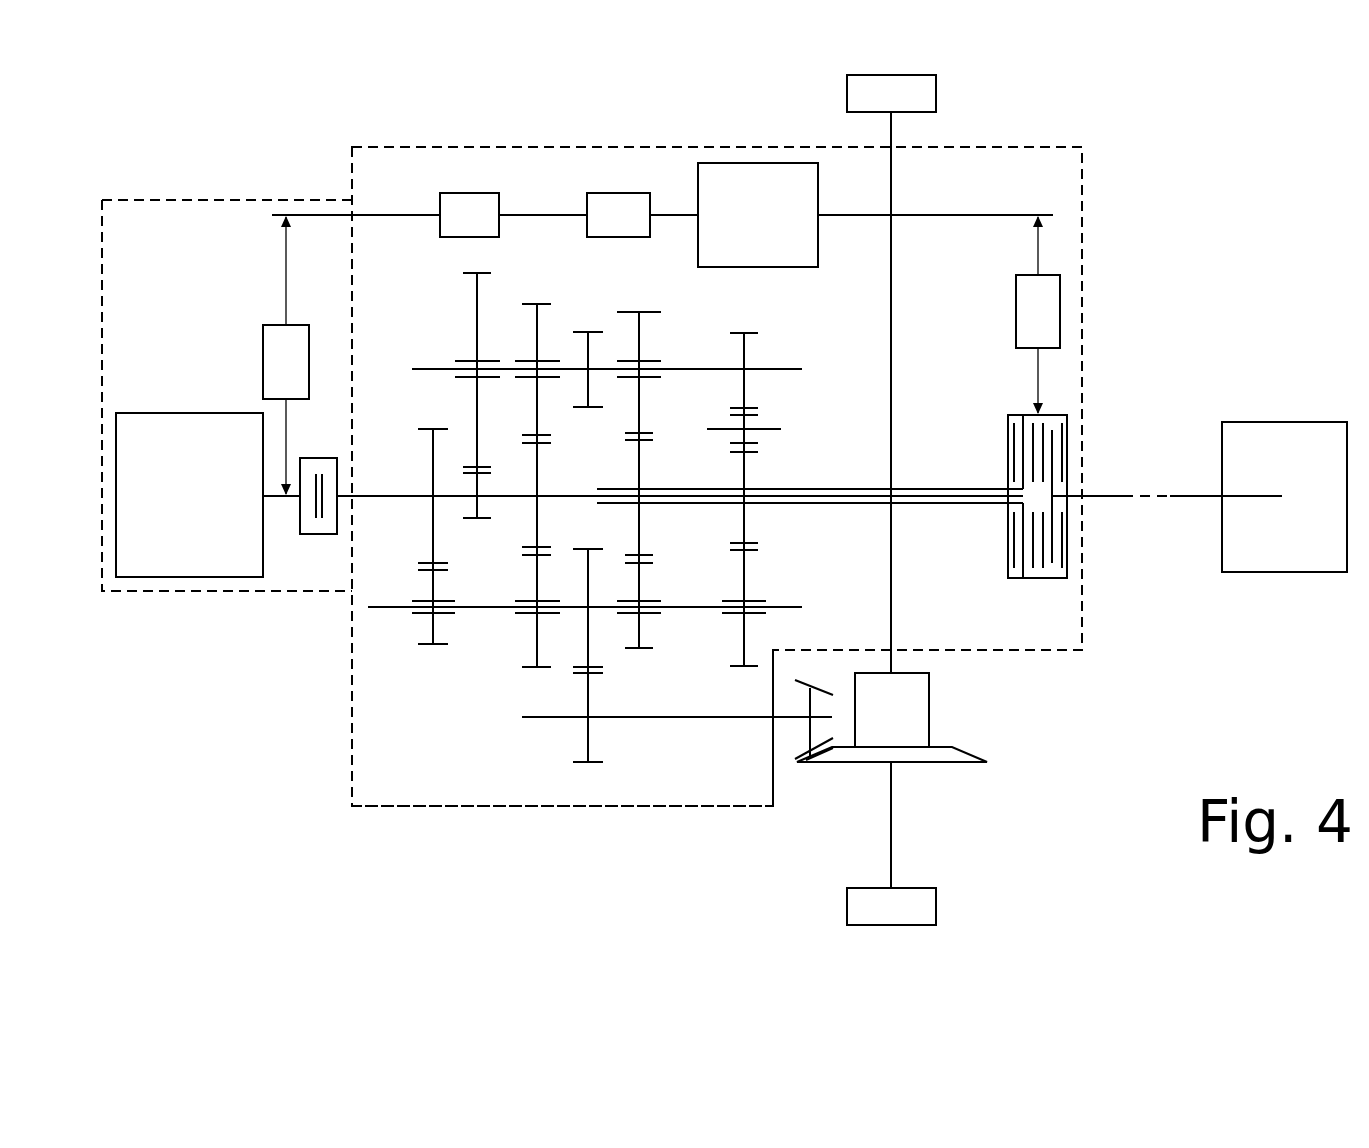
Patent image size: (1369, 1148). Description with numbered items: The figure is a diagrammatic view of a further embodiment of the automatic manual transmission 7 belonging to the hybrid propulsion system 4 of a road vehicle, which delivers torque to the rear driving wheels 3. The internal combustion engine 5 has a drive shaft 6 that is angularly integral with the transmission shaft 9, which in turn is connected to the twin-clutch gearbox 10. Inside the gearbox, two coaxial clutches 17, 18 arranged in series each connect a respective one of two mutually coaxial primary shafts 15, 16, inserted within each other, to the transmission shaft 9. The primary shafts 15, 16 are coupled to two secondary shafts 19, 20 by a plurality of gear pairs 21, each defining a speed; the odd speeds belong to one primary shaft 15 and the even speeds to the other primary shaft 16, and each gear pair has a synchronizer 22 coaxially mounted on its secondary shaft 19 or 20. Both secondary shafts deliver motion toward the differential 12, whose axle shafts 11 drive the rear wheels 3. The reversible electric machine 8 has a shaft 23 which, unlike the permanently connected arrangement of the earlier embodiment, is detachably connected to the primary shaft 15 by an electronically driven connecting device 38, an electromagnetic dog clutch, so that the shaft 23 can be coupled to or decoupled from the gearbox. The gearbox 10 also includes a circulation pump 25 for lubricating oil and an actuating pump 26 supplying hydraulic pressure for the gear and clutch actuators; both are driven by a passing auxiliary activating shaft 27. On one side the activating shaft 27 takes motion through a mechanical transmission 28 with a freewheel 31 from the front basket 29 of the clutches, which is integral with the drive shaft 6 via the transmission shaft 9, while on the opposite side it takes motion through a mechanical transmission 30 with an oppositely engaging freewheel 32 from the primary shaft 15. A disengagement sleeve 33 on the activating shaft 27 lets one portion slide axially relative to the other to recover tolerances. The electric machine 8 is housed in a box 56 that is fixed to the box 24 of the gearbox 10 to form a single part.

The rear driving wheels 3 is at (891, 500).
The hybrid propulsion system 4 is at (1147, 672).
The internal combustion engine 5 is at (1284, 497).
The drive shaft 6 is at (1265, 495).
The automatic manual transmission 7 is at (1247, 188).
The reversible electric machine 8 is at (189, 495).
The transmission shaft 9 is at (1111, 495).
The twin-clutch gearbox 10 is at (372, 855).
The axle shafts 11 is at (990, 717).
The differential 12 is at (893, 125).
The primary shaft 15 is at (392, 496).
The primary shaft 16 is at (828, 489).
The clutch 17 is at (1057, 393).
The clutch 18 is at (1018, 589).
The secondary shaft 19 is at (428, 369).
The secondary shaft 20 is at (472, 609).
The gear pairs 21 is at (438, 330).
The synchronizer 22 is at (487, 361).
The shaft 23 is at (281, 498).
The box 24 is at (518, 810).
The circulation pump 25 is at (618, 215).
The actuating pump 26 is at (758, 215).
The activating shaft 27 is at (1005, 218).
The mechanical transmission 28 is at (1066, 309).
The front basket 29 is at (1012, 413).
The mechanical transmission 30 is at (257, 327).
The freewheel 31 is at (1038, 311).
The freewheel 32 is at (286, 362).
The disengagement sleeve 33 is at (469, 215).
The connecting device 38 is at (323, 527).
The box 56 is at (137, 593).